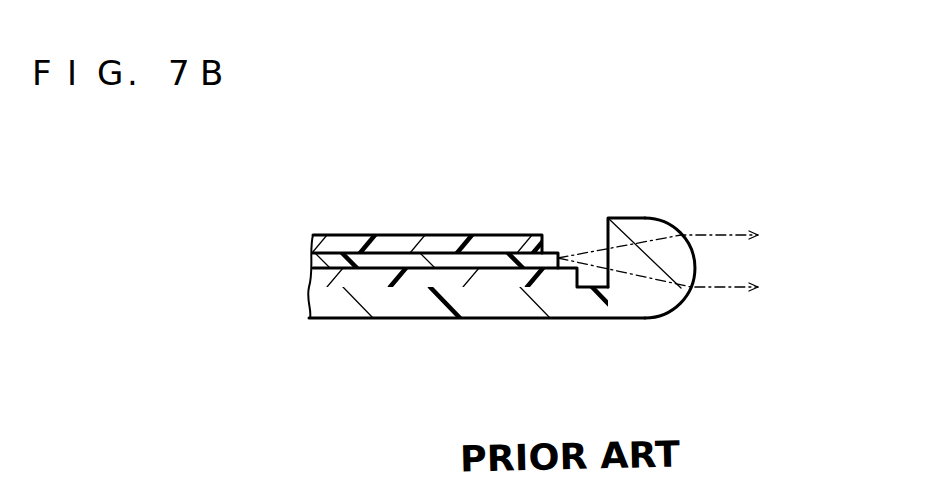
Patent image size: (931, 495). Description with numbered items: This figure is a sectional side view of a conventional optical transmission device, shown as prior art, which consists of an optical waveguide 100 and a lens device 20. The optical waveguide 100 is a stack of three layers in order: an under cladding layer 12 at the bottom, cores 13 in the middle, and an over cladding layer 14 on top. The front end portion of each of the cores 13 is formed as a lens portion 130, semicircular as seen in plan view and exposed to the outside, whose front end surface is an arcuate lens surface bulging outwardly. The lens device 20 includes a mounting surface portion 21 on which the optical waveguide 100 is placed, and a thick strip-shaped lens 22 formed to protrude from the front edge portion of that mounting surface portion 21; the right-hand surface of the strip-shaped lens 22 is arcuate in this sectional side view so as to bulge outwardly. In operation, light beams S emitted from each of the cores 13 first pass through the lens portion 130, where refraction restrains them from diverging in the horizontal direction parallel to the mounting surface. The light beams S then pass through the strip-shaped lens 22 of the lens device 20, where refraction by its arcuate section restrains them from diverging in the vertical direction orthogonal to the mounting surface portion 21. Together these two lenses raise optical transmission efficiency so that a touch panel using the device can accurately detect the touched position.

The optical waveguide 100 is at (327, 145).
The over cladding layer 14 is at (347, 247).
The cores 13 is at (410, 262).
The under cladding layer 12 is at (487, 276).
The lens portion 130 is at (555, 247).
The lens device 20 is at (610, 142).
The mounting surface portion 21 is at (553, 300).
The strip-shaped lens 22 is at (653, 230).
The light beams S is at (720, 233).